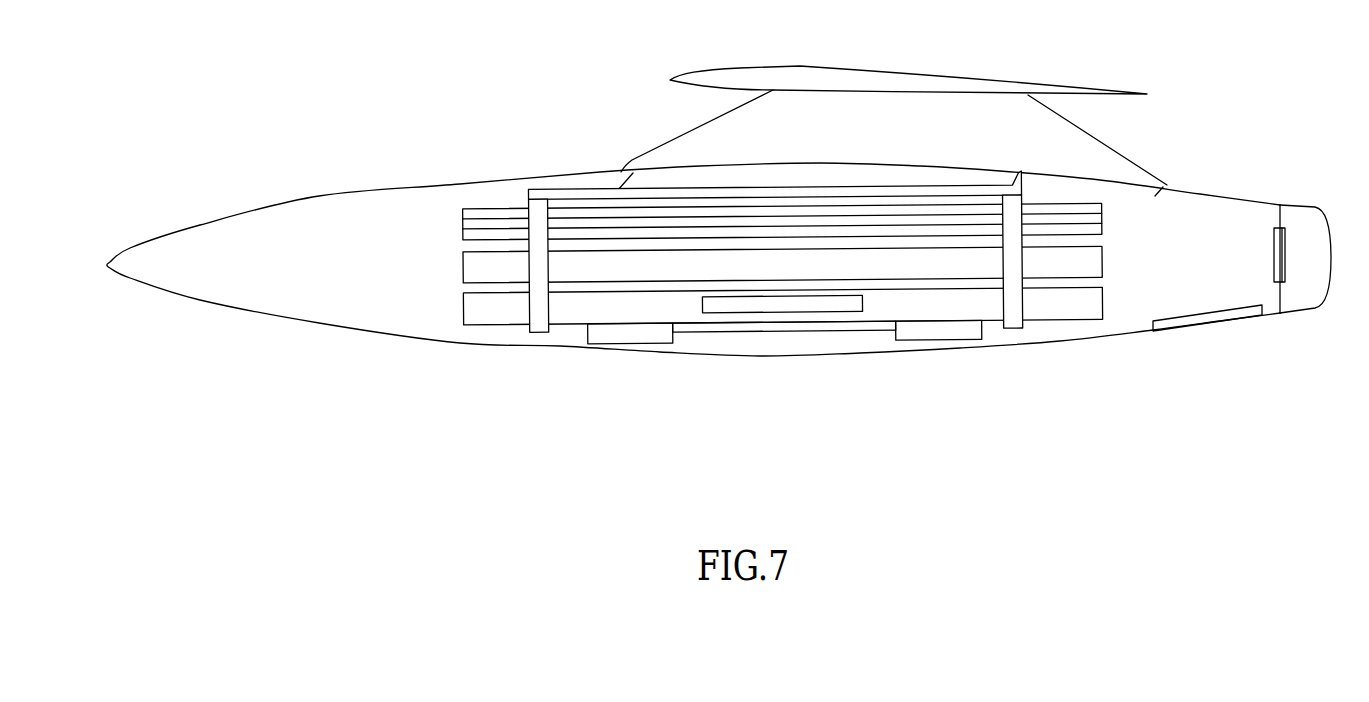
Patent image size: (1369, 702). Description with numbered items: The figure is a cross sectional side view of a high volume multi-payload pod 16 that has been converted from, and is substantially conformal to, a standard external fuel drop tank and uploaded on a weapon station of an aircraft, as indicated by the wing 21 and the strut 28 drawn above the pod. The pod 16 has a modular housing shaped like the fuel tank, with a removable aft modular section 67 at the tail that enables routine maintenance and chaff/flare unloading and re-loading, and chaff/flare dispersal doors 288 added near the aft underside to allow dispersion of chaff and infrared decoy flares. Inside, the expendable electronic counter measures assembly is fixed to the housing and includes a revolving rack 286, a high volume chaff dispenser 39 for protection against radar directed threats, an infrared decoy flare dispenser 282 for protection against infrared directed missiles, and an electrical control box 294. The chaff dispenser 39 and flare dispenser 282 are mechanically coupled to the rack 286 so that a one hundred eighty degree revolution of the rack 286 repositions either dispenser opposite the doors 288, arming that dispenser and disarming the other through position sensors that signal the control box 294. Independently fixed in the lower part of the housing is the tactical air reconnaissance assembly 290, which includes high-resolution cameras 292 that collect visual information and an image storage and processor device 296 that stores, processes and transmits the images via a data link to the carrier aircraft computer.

The high volume multi-payload pod 16 is at (319, 197).
The wing 21 is at (1048, 123).
The strut 28 is at (985, 176).
The high volume chaff dispenser 39 is at (463, 214).
The aft modular section 67 is at (1302, 220).
The infrared decoy flare dispenser 282 is at (463, 256).
The revolving rack 286 is at (1012, 262).
The chaff/flare dispersal doors 288 is at (1222, 327).
The tactical air reconnaissance assembly 290 is at (1060, 307).
The high-resolution cameras 292 is at (622, 343).
The electrical control box 294 is at (678, 195).
The image storage and processor device 296 is at (807, 313).